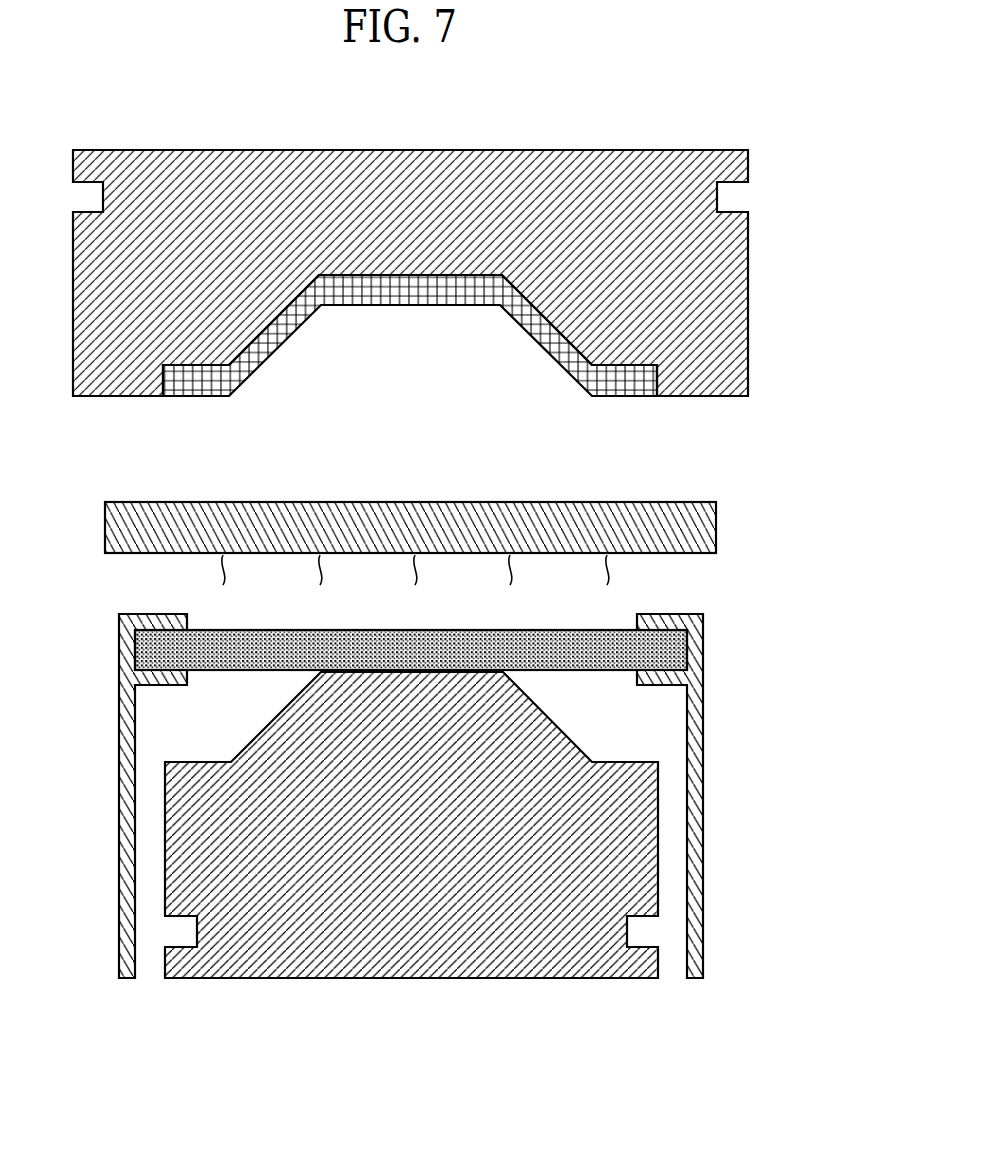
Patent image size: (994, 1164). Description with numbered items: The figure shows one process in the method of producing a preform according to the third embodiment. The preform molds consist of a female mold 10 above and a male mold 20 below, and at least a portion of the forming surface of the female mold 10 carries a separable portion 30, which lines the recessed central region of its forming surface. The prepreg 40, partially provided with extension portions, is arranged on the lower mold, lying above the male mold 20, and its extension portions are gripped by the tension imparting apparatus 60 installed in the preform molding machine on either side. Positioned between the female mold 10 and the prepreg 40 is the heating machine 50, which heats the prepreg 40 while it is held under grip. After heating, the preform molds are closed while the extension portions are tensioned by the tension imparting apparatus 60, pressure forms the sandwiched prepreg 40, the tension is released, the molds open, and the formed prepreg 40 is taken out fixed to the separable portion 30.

The female mold 10 is at (748, 377).
The male mold 20 is at (658, 840).
The separable portion 30 is at (458, 306).
The prepreg 40 is at (687, 652).
The heating machine 50 is at (716, 525).
The tension imparting apparatus 60 is at (119, 741).